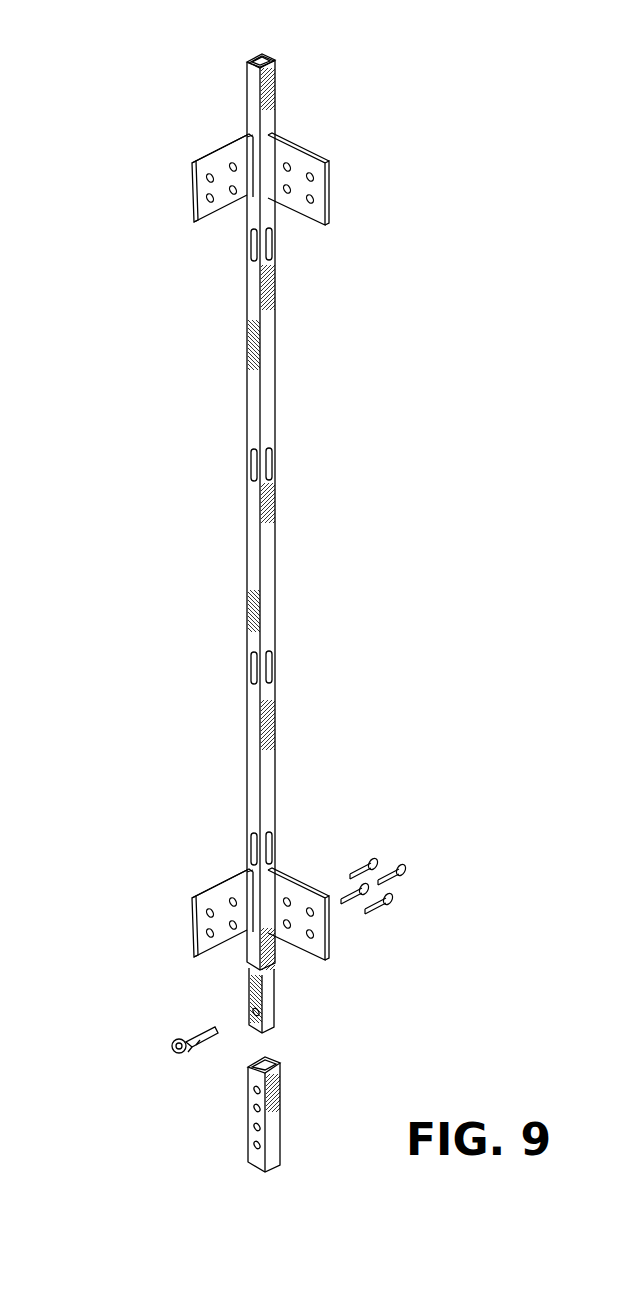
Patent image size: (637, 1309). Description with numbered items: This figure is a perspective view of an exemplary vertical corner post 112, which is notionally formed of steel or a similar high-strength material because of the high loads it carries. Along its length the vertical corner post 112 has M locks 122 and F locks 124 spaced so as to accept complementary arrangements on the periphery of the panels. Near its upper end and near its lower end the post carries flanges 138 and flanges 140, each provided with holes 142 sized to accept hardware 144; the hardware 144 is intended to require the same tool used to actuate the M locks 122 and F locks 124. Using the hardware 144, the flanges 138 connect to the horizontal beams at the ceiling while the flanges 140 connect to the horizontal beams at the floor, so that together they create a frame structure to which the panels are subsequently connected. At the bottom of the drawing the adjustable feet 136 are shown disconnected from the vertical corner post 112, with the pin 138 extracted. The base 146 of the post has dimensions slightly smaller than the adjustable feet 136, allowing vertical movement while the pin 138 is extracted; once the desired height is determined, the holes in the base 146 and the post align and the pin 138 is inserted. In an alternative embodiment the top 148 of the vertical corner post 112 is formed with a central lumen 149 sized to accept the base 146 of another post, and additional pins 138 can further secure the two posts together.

The vertical corner post 112 is at (80, 266).
The M locks 122 is at (252, 458).
The F locks 124 is at (252, 238).
The adjustable feet 136 is at (280, 1107).
The flanges / pin 138 is at (192, 180).
The flanges 140 is at (193, 915).
The holes 142 is at (312, 174).
The hardware 144 is at (404, 868).
The base 146 is at (268, 993).
The top 148 is at (278, 88).
The central lumen 149 is at (257, 58).